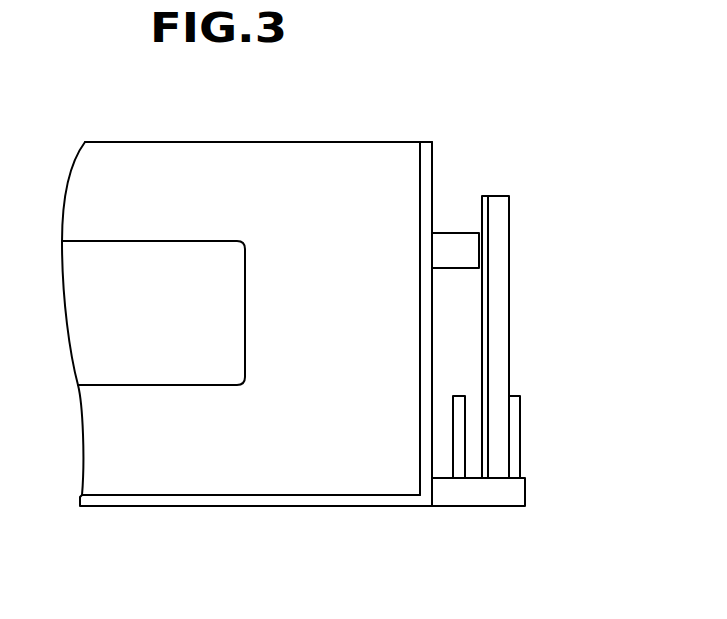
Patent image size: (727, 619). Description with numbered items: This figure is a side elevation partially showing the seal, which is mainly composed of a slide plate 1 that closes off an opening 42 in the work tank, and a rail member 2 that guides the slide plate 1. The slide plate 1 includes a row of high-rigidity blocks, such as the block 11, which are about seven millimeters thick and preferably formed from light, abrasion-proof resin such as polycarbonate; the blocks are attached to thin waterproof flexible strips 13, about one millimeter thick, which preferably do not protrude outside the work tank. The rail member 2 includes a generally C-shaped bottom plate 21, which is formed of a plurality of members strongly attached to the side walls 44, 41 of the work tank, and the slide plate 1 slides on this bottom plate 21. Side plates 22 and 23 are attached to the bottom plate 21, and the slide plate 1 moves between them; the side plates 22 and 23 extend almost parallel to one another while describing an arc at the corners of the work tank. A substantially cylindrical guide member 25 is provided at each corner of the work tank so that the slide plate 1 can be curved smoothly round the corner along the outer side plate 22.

The slide plate 1 is at (542, 318).
The rail member 2 is at (524, 448).
The block 11 is at (508, 294).
The waterproof flexible strip 13 is at (483, 204).
The bottom plate 21 is at (517, 496).
The side plate 22 is at (516, 448).
The side plate 23 is at (457, 469).
The guide member 25 is at (443, 240).
The side wall 41 is at (275, 142).
The opening 42 is at (213, 247).
The side wall 44 is at (426, 170).